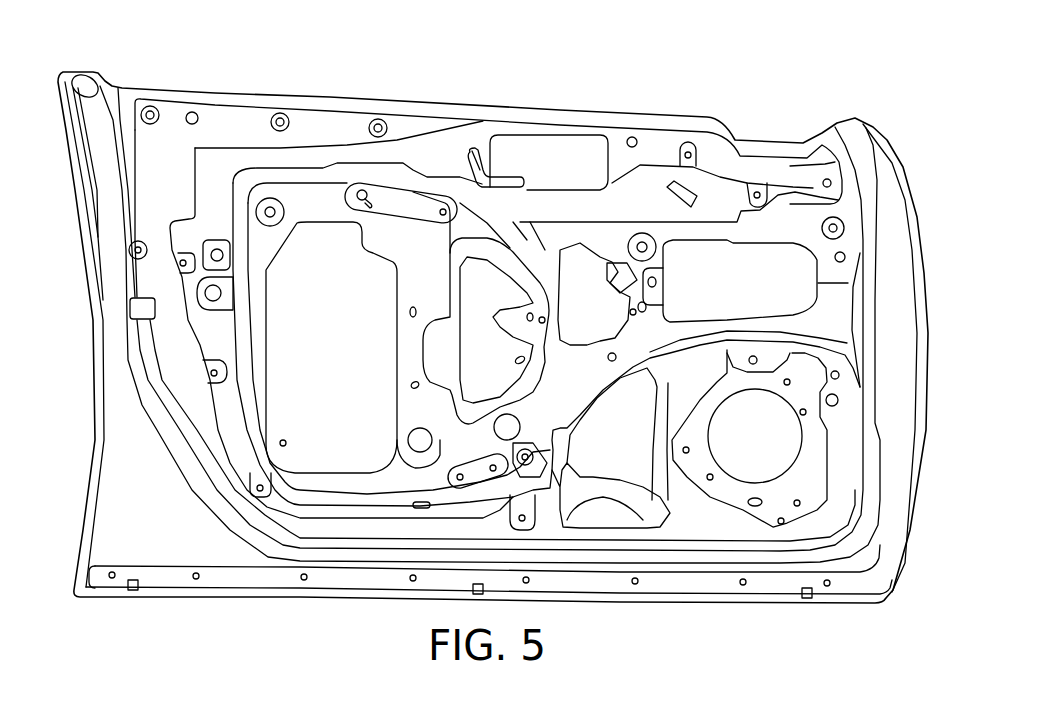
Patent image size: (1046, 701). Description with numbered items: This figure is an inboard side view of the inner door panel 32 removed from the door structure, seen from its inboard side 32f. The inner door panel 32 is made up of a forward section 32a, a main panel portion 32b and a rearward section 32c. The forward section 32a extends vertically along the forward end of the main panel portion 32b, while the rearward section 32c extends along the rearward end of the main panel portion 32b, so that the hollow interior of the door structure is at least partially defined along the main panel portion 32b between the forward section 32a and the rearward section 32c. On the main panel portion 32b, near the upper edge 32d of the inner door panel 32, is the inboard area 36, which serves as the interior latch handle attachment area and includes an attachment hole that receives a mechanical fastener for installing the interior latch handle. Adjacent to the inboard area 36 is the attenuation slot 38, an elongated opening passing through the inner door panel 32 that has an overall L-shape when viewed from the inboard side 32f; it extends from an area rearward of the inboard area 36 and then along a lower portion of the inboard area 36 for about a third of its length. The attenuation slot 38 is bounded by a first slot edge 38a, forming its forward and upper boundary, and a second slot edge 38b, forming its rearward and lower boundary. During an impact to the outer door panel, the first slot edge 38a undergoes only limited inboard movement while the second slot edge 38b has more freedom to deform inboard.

The inner door panel 32 is at (656, 105).
The forward section 32a is at (893, 265).
The main panel portion 32b is at (552, 398).
The rearward section 32c is at (115, 196).
The upper edge 32d is at (323, 93).
The inboard side 32f is at (428, 153).
The inboard area 36 is at (575, 157).
The attenuation slot 38 is at (478, 152).
The first slot edge 38a is at (497, 186).
The second slot edge 38b is at (494, 172).